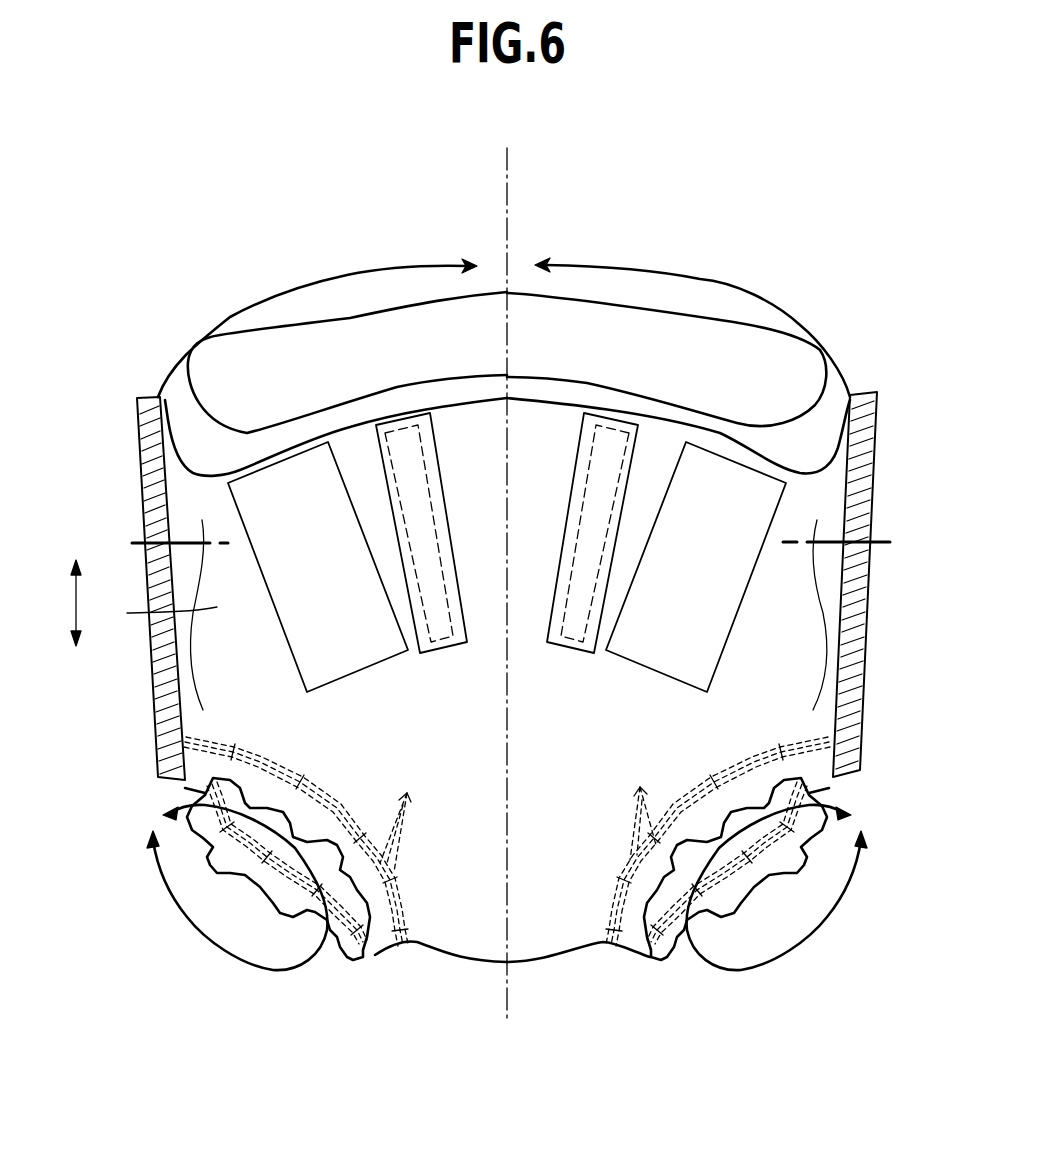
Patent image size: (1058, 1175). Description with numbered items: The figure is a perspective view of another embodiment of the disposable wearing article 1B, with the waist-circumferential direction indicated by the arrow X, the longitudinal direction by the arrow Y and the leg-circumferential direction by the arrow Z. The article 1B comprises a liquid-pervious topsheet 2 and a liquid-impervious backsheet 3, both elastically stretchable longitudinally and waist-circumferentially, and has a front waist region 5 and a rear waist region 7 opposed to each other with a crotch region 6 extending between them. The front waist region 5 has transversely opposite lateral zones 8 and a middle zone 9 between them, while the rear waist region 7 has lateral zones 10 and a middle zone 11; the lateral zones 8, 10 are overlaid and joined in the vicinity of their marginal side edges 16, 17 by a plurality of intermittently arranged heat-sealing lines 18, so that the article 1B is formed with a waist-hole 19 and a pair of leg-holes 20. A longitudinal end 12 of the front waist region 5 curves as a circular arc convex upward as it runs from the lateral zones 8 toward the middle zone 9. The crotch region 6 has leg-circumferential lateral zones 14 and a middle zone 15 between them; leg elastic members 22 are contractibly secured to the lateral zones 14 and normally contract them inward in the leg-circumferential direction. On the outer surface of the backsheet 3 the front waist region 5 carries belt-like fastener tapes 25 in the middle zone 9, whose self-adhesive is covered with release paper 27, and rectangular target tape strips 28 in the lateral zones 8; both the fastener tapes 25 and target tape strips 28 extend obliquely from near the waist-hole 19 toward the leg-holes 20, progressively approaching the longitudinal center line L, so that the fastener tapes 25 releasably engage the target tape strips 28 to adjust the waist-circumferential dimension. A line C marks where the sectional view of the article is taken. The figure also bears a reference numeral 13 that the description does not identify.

The article 1B is at (693, 267).
The topsheet 2 is at (697, 347).
The backsheet 3 is at (803, 690).
The front waist region 5 is at (740, 647).
The crotch region 6 is at (547, 945).
The rear waist region 7 is at (442, 340).
The lateral zones 8 is at (783, 580).
The middle zone 9 is at (533, 483).
The lateral zones 10 is at (185, 412).
The middle zone 11 is at (537, 333).
The longitudinal end 12 is at (473, 400).
The waist edge 13 is at (607, 303).
The lateral zones 14 is at (323, 827).
The middle zone 15 is at (470, 943).
The marginal side edge 16 is at (145, 462).
The marginal side edge 17 is at (104, 419).
The heat-sealing lines 18 is at (857, 453).
The waist-hole 19 is at (738, 367).
The leg-holes 20 is at (215, 875).
The leg elastic members 22 is at (507, 841).
The fastener tapes 25 is at (445, 633).
The release paper 27 is at (443, 537).
The target tape strips 28 is at (353, 643).
The longitudinal center line L is at (510, 200).
The line C— C is at (510, 543).
The arrow X is at (653, 270).
The arrow Y is at (74, 603).
The arrow Z is at (203, 944).